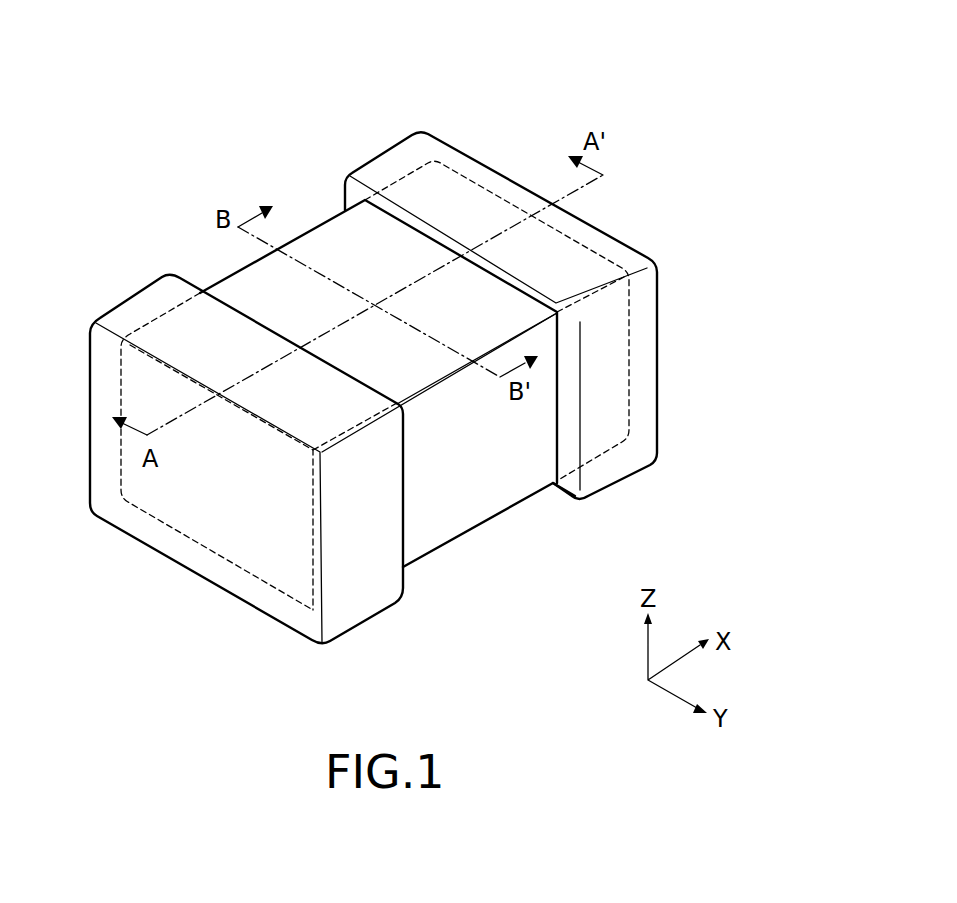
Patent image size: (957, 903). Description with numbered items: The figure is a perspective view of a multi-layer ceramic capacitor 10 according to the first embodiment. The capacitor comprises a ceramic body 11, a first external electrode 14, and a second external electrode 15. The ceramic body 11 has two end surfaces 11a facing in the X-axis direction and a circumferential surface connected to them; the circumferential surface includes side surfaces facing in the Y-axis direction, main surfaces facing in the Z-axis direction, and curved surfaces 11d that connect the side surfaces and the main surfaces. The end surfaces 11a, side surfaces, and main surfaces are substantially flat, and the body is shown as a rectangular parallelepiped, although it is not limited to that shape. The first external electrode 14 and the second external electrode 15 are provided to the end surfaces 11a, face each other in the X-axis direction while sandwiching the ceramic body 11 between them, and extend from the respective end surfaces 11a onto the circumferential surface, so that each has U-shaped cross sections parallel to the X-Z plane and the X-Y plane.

The multi-layer ceramic capacitor 10 is at (373, 330).
The ceramic body 11 is at (350, 382).
The end surface 11a is at (216, 530).
The curved surface 11d is at (450, 382).
The first external electrode 14 is at (144, 316).
The second external electrode 15 is at (398, 167).